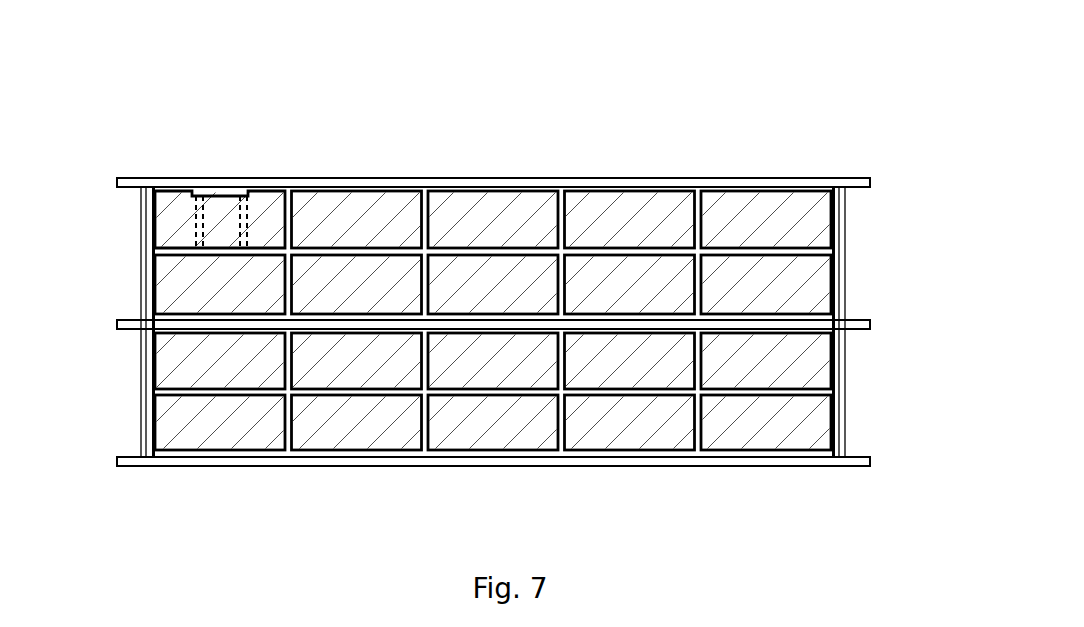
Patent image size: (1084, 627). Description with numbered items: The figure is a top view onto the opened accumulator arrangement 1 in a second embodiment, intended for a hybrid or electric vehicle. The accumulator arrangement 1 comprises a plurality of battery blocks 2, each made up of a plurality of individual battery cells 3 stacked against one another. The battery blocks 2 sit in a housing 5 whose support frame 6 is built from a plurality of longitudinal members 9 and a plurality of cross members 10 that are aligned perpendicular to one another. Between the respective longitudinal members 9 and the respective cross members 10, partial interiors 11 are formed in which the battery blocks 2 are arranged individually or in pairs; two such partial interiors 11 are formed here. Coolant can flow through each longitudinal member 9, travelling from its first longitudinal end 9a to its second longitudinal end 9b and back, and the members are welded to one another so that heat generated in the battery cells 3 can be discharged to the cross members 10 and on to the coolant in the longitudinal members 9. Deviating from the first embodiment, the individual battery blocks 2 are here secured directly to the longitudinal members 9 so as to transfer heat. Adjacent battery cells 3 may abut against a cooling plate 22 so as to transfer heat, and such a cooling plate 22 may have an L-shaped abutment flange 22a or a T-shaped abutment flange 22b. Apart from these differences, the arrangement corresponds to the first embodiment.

The accumulator arrangement 1 is at (898, 150).
The battery block 2 is at (434, 319).
The battery cell 3 is at (269, 228).
The housing 5 is at (493, 129).
The support frame 6 is at (348, 165).
The longitudinal member 9 is at (493, 303).
The first longitudinal end 9a is at (116, 460).
The second longitudinal end 9b is at (905, 321).
The cross member 10 is at (884, 391).
The partial interior 11 is at (665, 235).
The cooling plate 22 is at (235, 147).
The L-shaped abutment flange 22a is at (244, 210).
The T-shaped abutment flange 22b is at (224, 198).